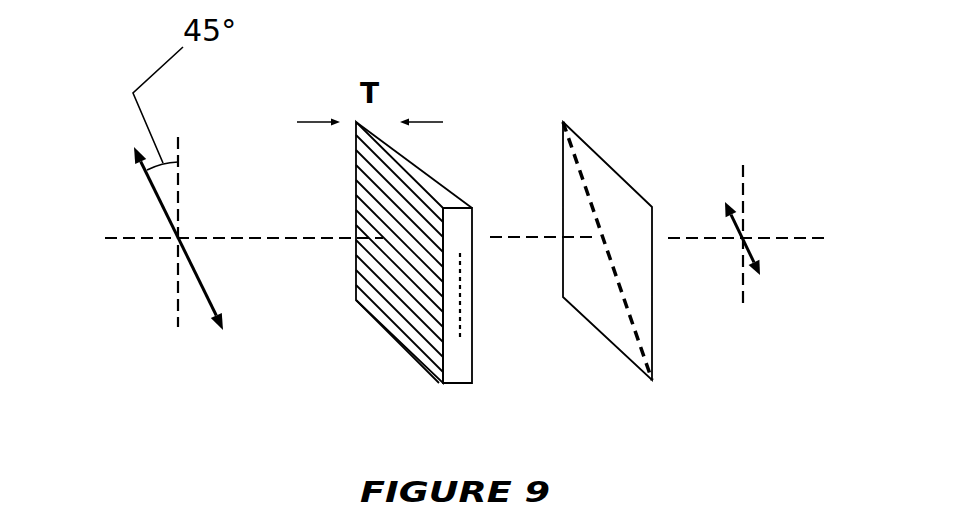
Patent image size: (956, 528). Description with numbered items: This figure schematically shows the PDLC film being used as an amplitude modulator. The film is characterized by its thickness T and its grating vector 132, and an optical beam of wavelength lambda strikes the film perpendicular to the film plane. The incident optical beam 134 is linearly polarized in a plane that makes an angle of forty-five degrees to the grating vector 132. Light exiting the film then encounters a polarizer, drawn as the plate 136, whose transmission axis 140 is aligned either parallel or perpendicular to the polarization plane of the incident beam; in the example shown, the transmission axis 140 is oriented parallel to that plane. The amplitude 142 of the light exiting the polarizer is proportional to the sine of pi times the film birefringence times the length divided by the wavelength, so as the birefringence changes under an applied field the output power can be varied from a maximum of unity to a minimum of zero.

The grating vector 132 is at (460, 355).
The incident optical beam 134 is at (142, 232).
The wave plate 136 is at (584, 231).
The transmission axis 140 is at (654, 384).
The amplitude 142 is at (778, 235).